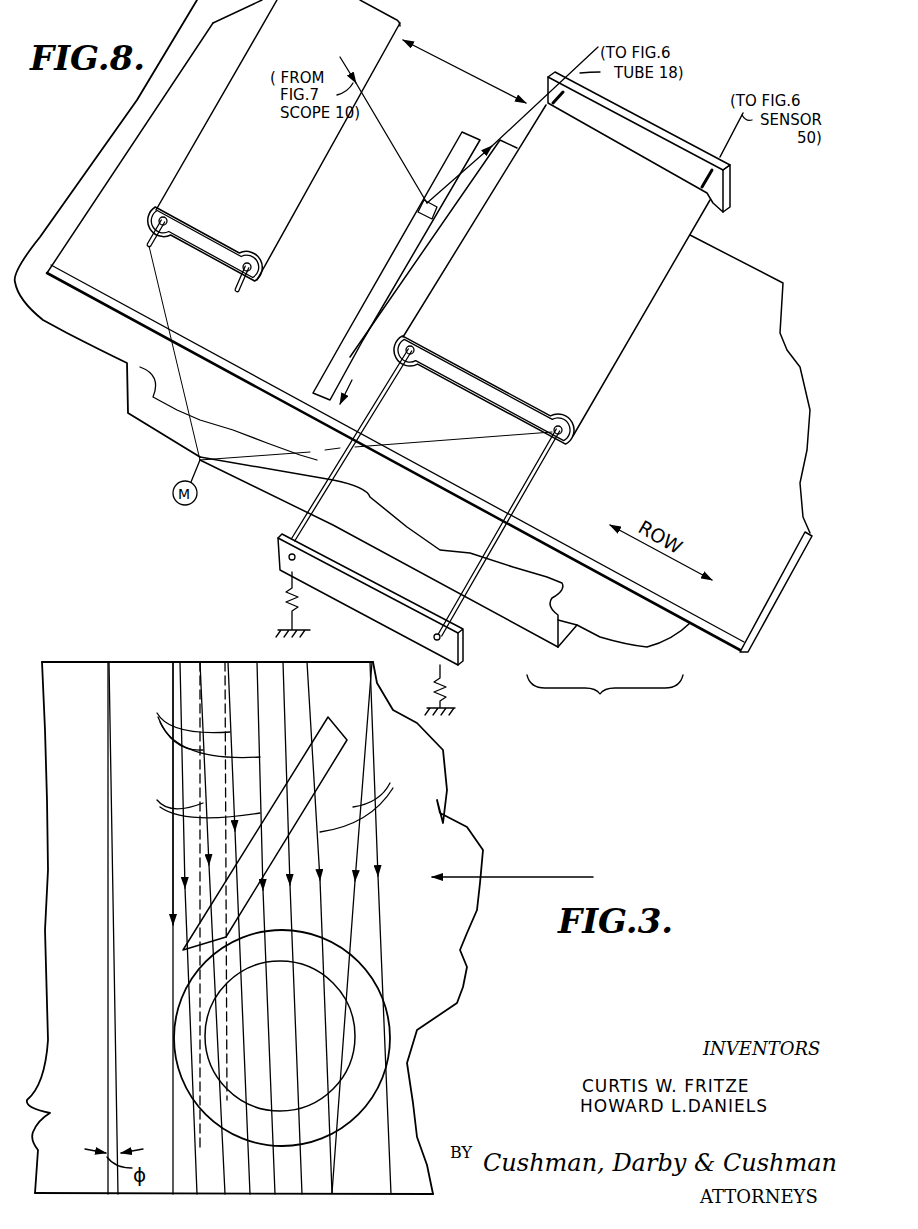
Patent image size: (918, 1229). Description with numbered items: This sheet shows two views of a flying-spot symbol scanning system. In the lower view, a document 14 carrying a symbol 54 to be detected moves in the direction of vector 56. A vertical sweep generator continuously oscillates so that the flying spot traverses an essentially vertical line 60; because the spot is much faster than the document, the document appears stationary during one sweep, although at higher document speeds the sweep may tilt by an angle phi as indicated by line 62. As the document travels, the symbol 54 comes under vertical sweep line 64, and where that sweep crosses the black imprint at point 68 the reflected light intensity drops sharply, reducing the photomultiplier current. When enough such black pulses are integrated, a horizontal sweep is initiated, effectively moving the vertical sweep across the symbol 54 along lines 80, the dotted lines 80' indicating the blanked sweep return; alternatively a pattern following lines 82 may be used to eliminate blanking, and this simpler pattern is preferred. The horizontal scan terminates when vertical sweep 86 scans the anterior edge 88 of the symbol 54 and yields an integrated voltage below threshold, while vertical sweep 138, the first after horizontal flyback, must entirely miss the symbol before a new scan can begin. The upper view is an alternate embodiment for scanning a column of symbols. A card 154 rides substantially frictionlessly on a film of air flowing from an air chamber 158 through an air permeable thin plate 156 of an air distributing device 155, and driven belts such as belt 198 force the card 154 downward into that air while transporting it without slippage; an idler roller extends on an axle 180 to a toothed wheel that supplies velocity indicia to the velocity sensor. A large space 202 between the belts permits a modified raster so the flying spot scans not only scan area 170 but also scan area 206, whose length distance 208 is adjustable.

In FIG. 8, the large space 202 is at (437, 60).
In FIG. 8, the scan area 170 is at (423, 201).
In FIG. 8, the scan area 206 is at (377, 282).
In FIG. 8, the length distance 208 is at (427, 257).
In FIG. 8, the axle 180 is at (727, 150).
In FIG. 8, the belt 198 is at (607, 387).
In FIG. 8, the air chamber 158 is at (527, 632).
In FIG. 8, the air permeable membrane or thin plate 156 is at (642, 647).
In FIG. 8, the air distributing device 155 is at (605, 693).
In FIG. 8, the card 154 is at (740, 653).
In FIG. 3, the document 14 is at (457, 1002).
In FIG. 3, the essentially vertical line 60 is at (108, 966).
In FIG. 3, the line 62 is at (118, 1016).
In FIG. 3, the vertical sweep line 64 is at (173, 962).
In FIG. 3, the point 68 is at (173, 1040).
In FIG. 3, the vertical sweep 138 is at (283, 690).
In FIG. 3, the vertical sweep 86 is at (377, 838).
In FIG. 3, the lines 82 is at (294, 833).
In FIG. 3, the lines 80 is at (203, 724).
In FIG. 3, the dotted lines 80' is at (198, 802).
In FIG. 3, the symbol 54 is at (363, 951).
In FIG. 3, the anterior edge 88 is at (387, 1017).
In FIG. 3, the vector 56 is at (509, 877).